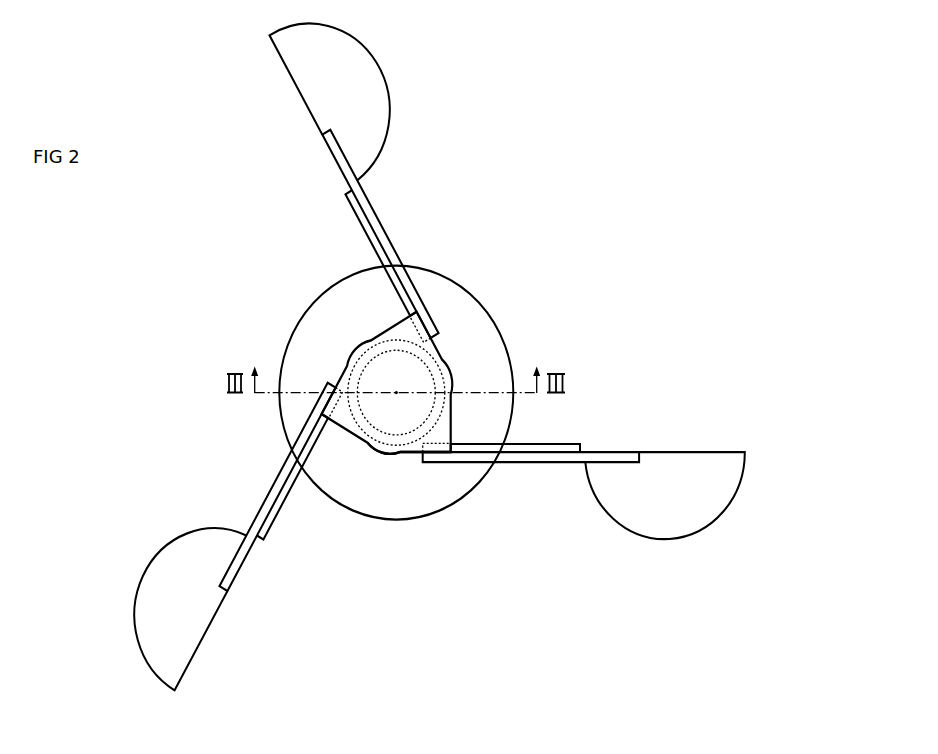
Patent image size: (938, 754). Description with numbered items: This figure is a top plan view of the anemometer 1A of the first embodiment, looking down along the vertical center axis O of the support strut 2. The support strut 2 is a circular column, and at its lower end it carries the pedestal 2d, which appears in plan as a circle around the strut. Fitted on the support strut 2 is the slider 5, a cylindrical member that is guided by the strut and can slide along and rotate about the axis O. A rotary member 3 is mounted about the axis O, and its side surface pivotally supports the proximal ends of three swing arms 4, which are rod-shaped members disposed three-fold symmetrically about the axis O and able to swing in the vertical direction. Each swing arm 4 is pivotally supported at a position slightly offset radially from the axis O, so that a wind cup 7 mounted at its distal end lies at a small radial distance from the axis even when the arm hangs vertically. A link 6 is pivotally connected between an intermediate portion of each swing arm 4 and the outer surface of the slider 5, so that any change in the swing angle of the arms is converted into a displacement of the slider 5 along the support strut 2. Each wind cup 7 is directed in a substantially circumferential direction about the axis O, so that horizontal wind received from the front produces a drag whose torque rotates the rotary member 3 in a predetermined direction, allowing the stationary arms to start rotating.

The anemometer 1A is at (513, 74).
The support strut 2 is at (355, 345).
The pedestal 2d is at (437, 287).
The rotary member 3 is at (403, 455).
The swing arm 4 is at (384, 225).
The slider 5 is at (392, 455).
The link 6 is at (363, 227).
The wind cup 7 is at (365, 80).
The center axis O is at (396, 393).